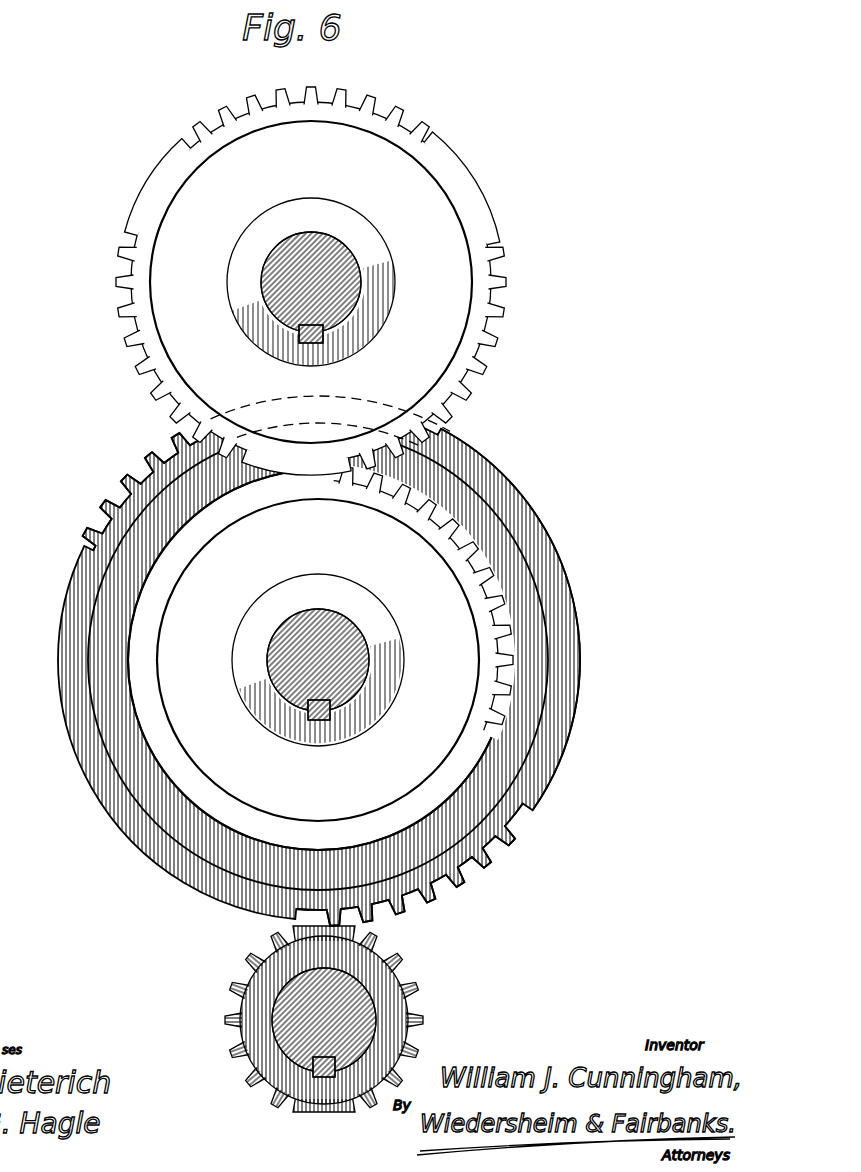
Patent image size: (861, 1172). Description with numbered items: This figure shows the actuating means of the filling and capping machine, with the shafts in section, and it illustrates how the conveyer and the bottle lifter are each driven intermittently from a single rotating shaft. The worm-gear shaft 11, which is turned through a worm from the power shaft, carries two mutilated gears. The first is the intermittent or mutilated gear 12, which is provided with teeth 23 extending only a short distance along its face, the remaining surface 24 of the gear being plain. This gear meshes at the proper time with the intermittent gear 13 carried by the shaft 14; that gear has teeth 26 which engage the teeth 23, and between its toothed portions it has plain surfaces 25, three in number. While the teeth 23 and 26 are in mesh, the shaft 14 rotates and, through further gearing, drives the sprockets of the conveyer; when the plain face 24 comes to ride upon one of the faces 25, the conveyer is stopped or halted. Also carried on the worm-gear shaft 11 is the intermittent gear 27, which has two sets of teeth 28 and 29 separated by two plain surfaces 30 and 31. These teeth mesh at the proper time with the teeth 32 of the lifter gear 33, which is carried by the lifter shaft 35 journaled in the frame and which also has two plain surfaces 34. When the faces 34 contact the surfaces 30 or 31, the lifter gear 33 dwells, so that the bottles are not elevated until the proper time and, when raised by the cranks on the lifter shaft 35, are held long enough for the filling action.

The worm-gear shaft 11 is at (362, 664).
The intermittent or mutilated gear 12 is at (336, 643).
The mutilated or intermittent gear 13 is at (308, 264).
The shaft 14 is at (262, 287).
The teeth 23 is at (423, 598).
The plain surface 24 is at (131, 663).
The plain surfaces 25 is at (304, 303).
The teeth 26 is at (308, 262).
The intermittent gear 27 is at (110, 729).
The teeth 28 is at (522, 838).
The teeth 29 is at (142, 464).
The plain surface 30 is at (133, 845).
The plain surface 31 is at (490, 474).
The teeth 32 is at (314, 1020).
The lifter gear 33 is at (314, 1035).
The plain surfaces 34 is at (277, 1035).
The lifter shaft 35 is at (283, 1039).